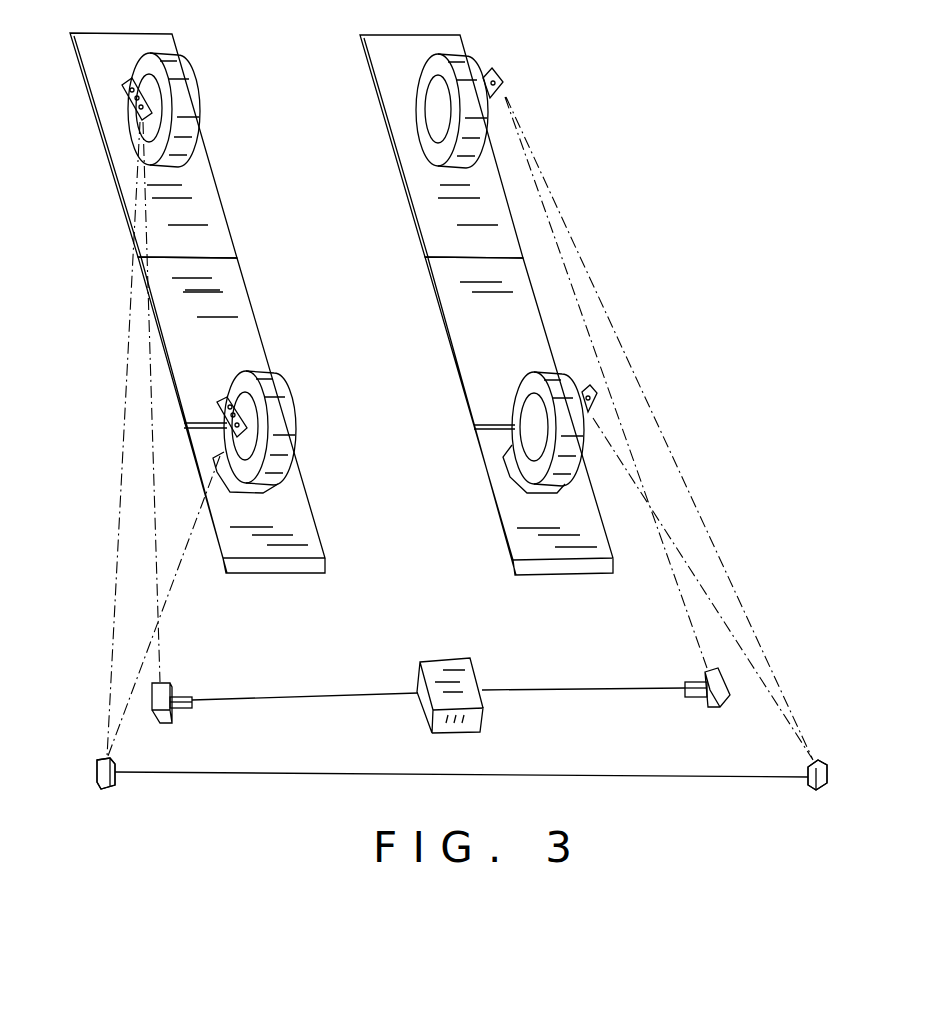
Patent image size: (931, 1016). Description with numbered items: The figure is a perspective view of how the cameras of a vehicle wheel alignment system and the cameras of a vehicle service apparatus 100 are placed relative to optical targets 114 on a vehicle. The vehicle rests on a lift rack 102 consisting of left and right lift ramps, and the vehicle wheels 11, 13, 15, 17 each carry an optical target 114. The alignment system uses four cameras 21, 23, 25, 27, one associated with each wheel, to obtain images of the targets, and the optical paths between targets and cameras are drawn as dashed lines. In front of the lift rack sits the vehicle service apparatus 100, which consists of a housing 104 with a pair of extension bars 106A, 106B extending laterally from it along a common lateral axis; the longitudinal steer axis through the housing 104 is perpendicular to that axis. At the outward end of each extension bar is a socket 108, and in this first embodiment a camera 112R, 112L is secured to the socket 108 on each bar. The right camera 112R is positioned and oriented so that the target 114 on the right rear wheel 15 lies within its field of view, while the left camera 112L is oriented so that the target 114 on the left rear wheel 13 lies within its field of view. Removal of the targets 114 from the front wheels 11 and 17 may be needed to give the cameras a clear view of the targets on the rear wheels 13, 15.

The front left vehicle wheel 11 is at (567, 455).
The left rear wheel 13 is at (468, 147).
The right rear wheel 15 is at (182, 123).
The front right vehicle wheel 17 is at (282, 423).
The camera 21 is at (827, 782).
The camera 23 is at (817, 775).
The camera 25 is at (102, 773).
The camera 27 is at (106, 773).
The vehicle service apparatus 100 is at (494, 686).
The vehicle lift rack 102 is at (288, 575).
The housing 104 is at (460, 692).
The right cable 106A is at (282, 700).
The left cable 106B is at (615, 690).
The socket 108 is at (180, 695).
The left camera 112L is at (727, 700).
The right camera 112R is at (158, 718).
The optical target 114 is at (123, 80).